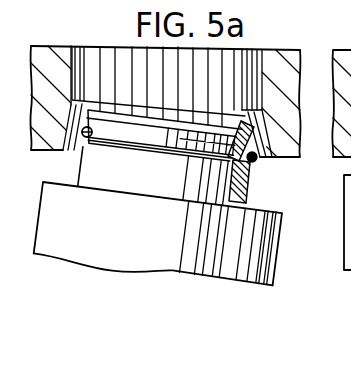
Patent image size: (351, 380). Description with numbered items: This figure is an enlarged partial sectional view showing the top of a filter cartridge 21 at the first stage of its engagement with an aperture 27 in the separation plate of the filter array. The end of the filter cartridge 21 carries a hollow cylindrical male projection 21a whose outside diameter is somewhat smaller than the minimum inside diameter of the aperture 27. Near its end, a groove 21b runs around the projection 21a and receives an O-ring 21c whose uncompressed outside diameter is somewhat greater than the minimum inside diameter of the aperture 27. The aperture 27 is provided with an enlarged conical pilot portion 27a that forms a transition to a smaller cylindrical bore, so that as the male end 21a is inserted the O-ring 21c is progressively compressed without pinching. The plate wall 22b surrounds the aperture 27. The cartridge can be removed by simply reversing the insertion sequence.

The aperture 27 is at (113, 77).
The enlarged conical pilot portion 27a is at (78, 150).
The inner wall of socket 22b is at (260, 77).
The filter cartridge 21 is at (230, 284).
The projection 21a is at (247, 196).
The groove 21b is at (251, 182).
The O-ring 21c is at (258, 159).